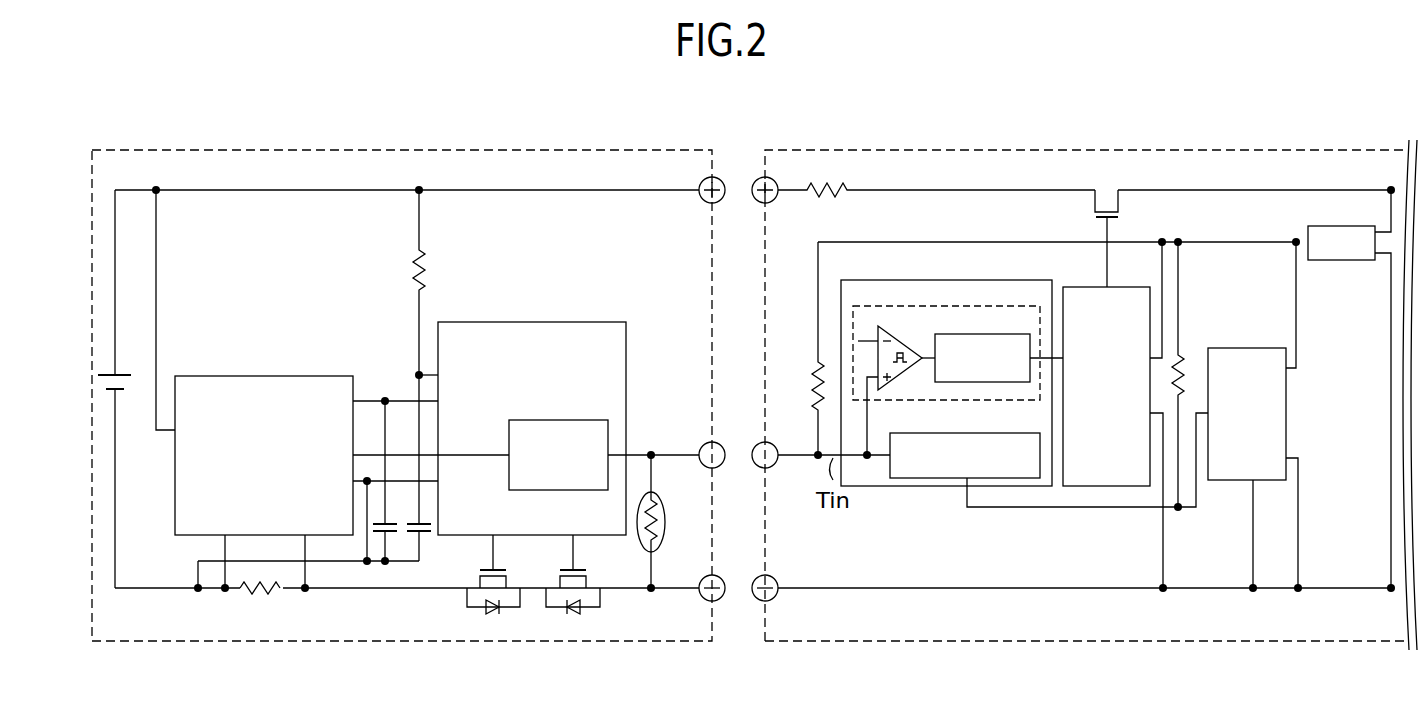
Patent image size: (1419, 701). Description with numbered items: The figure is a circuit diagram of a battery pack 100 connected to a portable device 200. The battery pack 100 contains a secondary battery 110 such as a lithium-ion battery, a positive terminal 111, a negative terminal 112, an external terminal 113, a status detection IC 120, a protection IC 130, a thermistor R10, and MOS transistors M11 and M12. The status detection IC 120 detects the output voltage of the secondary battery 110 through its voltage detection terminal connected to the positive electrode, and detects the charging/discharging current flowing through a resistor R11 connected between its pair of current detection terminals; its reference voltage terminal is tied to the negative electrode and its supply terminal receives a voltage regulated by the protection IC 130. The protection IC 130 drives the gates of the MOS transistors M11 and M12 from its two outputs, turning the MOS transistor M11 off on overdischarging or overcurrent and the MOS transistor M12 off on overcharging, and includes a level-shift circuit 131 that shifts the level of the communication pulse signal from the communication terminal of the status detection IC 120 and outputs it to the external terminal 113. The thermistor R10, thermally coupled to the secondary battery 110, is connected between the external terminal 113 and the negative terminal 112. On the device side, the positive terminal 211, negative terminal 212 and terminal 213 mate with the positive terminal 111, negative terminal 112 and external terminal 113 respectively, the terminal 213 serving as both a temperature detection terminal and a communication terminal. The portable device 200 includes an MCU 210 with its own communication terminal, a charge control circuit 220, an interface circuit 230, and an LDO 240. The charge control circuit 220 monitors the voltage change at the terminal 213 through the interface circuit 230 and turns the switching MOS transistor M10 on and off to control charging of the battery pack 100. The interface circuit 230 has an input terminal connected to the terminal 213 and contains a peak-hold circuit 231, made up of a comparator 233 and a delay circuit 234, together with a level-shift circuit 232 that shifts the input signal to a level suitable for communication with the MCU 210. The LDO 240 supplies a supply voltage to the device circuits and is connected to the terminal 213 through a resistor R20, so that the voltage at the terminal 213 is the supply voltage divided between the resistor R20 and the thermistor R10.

The battery pack 100 is at (605, 150).
The secondary battery 110 is at (122, 392).
The positive terminal 111 is at (722, 203).
The negative terminal 112 is at (722, 601).
The external terminal 113 is at (722, 468).
The status detection IC 120 is at (300, 376).
The protection IC 130 is at (592, 322).
The level-shift circuit 131 is at (590, 420).
The portable device 200 is at (1215, 150).
The main body control circuit (MCU) 210 is at (1234, 348).
The positive terminal 211 is at (758, 180).
The negative terminal 212 is at (756, 577).
The terminal 213 is at (756, 444).
The charge control circuit 220 is at (1112, 287).
The interface circuit 230 is at (1010, 280).
The peak-hold circuit 231 is at (968, 306).
The level-shift circuit 232 is at (958, 433).
The comparator 233 is at (905, 342).
The delay circuit 234 is at (984, 334).
The power supply circuit (LDO) 240 is at (1327, 226).
The switching device (MOS transistor) M10 is at (1084, 216).
The MOS transistor M11 is at (485, 574).
The MOS transistor M12 is at (565, 574).
The thermistor R10 is at (673, 521).
The resistor R11 is at (260, 602).
The resistor R20 is at (798, 348).